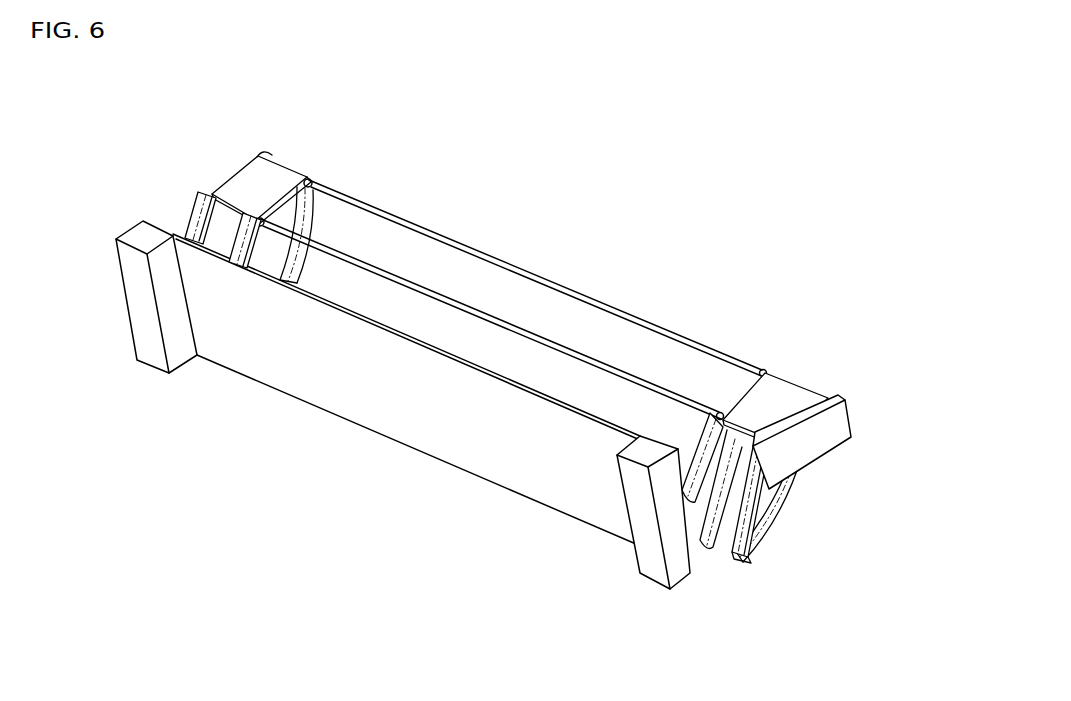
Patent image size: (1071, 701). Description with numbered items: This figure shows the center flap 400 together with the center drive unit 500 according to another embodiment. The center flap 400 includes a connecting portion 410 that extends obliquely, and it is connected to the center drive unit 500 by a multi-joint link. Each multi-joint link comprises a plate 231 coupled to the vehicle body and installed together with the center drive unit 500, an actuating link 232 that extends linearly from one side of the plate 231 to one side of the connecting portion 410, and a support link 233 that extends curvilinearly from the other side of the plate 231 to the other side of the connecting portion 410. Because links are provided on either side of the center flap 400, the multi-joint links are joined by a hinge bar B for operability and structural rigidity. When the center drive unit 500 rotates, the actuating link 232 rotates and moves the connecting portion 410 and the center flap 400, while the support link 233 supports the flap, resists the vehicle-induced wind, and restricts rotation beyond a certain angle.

The plate 231 is at (248, 183).
The actuating link 232 is at (202, 212).
The support link 233 is at (320, 185).
The hinge bar B is at (520, 270).
The center flap 400 is at (398, 418).
The connecting portion 410 is at (688, 577).
The center drive unit 500 is at (828, 437).